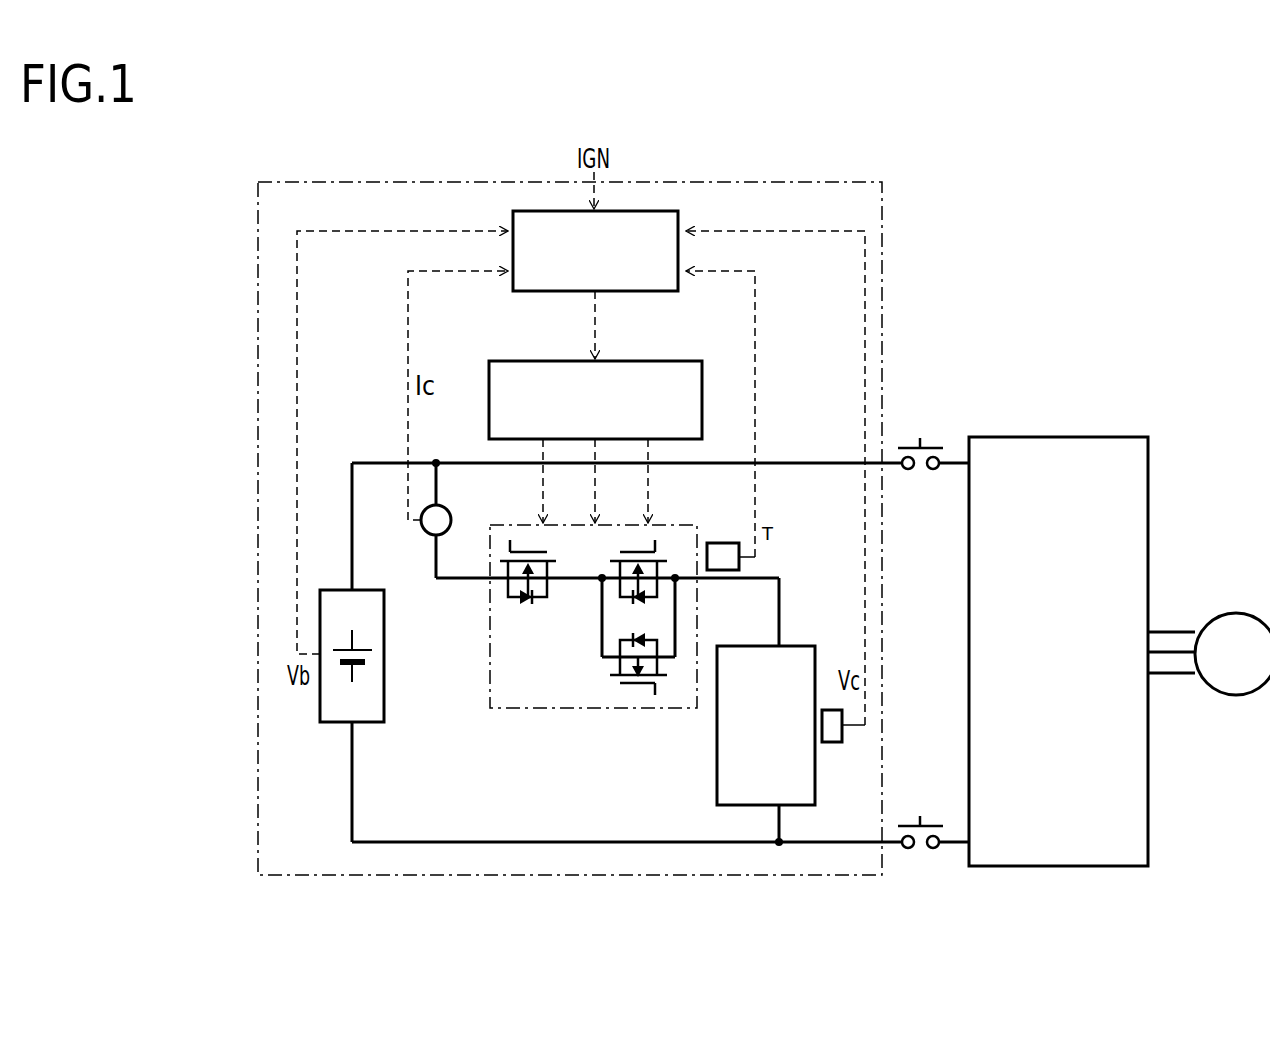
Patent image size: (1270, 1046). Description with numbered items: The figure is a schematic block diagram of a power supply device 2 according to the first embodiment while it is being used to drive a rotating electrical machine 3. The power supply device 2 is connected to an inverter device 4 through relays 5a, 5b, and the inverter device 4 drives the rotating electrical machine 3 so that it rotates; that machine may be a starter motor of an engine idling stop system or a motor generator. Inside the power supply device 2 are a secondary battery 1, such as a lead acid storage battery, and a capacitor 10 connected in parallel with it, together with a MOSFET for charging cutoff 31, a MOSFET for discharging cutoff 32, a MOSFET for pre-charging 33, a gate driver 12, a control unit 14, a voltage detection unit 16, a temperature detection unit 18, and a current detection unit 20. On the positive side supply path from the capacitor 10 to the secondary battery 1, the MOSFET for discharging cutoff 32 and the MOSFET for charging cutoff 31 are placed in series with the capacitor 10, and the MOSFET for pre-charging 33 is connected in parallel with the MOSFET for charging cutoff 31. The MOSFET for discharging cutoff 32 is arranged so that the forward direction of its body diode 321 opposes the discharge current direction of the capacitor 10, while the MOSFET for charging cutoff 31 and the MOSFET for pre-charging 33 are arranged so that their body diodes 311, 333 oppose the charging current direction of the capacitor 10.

The secondary battery 1 is at (343, 723).
The power supply device 2 is at (760, 182).
The rotating electrical machine 3 is at (1238, 613).
The inverter device 4 is at (1063, 437).
The relay 5a is at (920, 437).
The relay 5b is at (920, 816).
The capacitor 10 is at (717, 769).
The gate driver 12 is at (657, 361).
The control unit 14 is at (646, 211).
The voltage detection unit 16 is at (835, 745).
The temperature detection unit 18 is at (741, 565).
The current detection unit 20 is at (452, 511).
The MOSFET for charging cutoff 31 is at (634, 580).
The MOSFET for discharging cutoff 32 is at (504, 612).
The MOSFET for pre-charging 33 is at (674, 690).
The body diode 311 is at (622, 603).
The body diode 321 is at (528, 608).
The body diode 333 is at (652, 632).